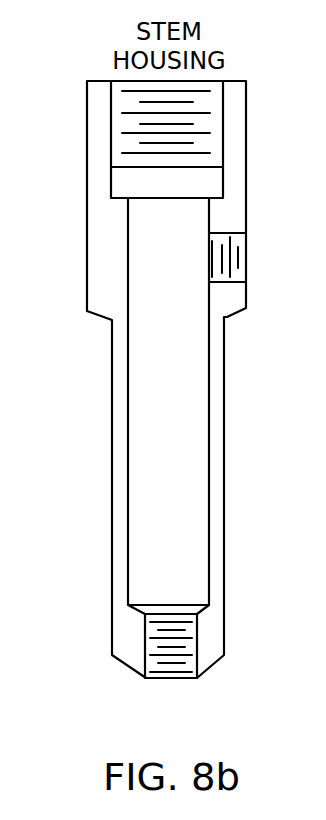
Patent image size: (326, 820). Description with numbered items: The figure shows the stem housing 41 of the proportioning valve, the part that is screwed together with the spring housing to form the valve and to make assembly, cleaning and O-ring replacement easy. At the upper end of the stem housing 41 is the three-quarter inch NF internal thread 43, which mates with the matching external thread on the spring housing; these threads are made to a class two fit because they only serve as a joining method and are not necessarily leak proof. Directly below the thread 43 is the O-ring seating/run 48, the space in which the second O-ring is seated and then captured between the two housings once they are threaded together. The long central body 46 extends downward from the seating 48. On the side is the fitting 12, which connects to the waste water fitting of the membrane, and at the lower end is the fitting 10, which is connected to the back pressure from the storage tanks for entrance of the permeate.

The stem housing 41 is at (70, 441).
The internal thread 43 is at (117, 143).
The O-ring seating/run 48 is at (117, 178).
The stem 46 is at (182, 370).
The side fitting 12 is at (233, 262).
The fitting 10 is at (173, 663).